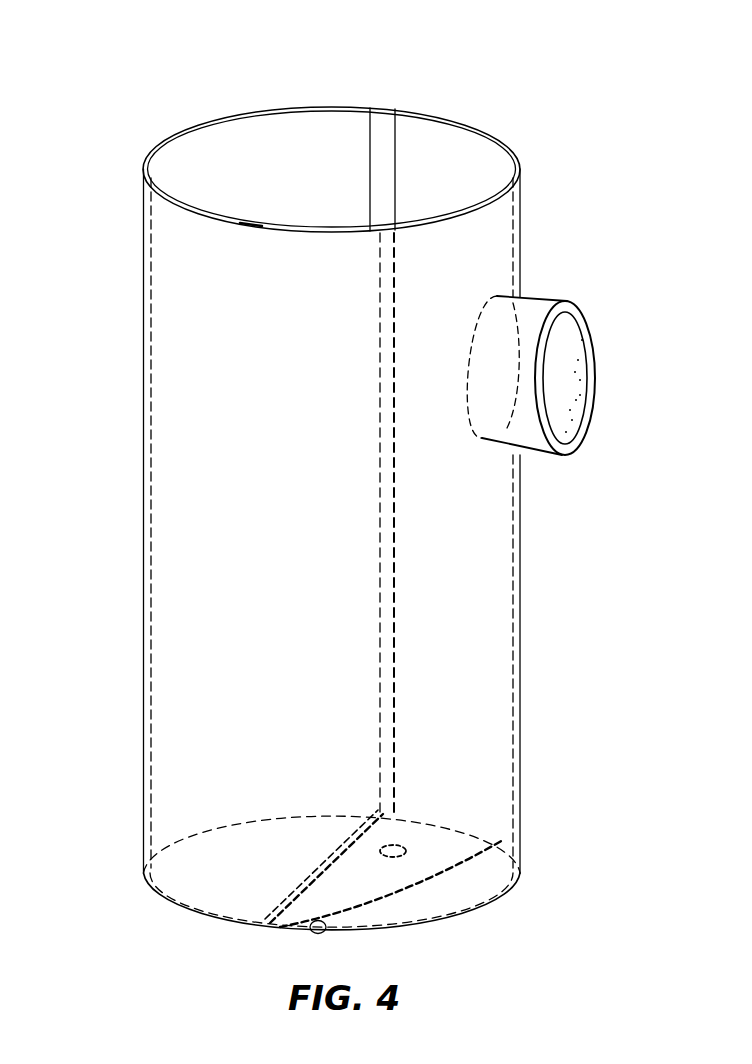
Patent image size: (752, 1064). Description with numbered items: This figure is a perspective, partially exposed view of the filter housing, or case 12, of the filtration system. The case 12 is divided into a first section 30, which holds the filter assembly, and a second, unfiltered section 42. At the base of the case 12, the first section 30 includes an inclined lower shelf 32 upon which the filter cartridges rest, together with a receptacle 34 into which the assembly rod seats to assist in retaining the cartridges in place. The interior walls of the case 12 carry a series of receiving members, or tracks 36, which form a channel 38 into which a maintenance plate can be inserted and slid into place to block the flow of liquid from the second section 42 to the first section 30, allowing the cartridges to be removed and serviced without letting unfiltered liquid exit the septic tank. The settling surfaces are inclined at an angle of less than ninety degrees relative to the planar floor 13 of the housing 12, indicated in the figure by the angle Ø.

The filter housing 12 is at (82, 548).
The planar floor 13 is at (398, 905).
The first section 30 is at (486, 180).
The inclined lower shelf 32 is at (503, 840).
The receptacle 34 is at (406, 850).
The receiving members 36 is at (255, 222).
The channel 38 is at (375, 108).
The second section 42 is at (252, 160).